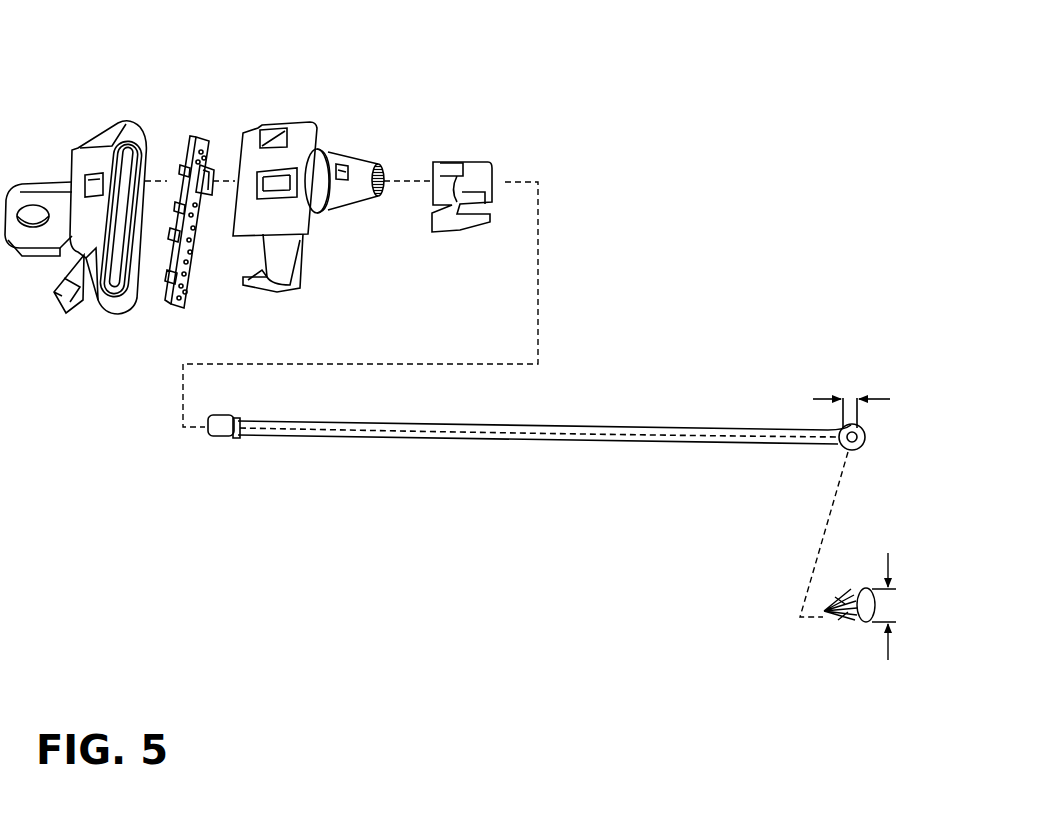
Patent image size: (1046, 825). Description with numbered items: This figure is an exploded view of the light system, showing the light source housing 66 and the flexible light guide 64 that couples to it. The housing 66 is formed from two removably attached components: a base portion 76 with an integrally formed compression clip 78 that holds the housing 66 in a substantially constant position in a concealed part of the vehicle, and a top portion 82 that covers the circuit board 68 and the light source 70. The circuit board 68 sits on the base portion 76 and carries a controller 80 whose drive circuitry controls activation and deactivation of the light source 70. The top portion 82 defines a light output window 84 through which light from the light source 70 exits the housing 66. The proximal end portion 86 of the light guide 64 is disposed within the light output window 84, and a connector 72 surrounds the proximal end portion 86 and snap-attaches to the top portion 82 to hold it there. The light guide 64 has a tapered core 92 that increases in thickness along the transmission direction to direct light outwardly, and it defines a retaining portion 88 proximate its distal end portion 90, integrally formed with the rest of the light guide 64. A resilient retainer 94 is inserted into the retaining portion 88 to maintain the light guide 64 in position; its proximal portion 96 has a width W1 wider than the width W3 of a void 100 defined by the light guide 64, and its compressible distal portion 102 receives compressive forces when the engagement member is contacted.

The light guide 64 is at (612, 428).
The light source housing 66 is at (133, 118).
The circuit board 68 is at (192, 140).
The light source 70 is at (213, 182).
The connector 72 is at (440, 168).
The base portion 76 is at (108, 146).
The compression clip 78 is at (77, 307).
The controller 80 is at (163, 259).
The top portion 82 is at (300, 147).
The light output window 84 is at (382, 178).
The proximal end portion 86 is at (226, 442).
The retaining portion 88 is at (843, 439).
The distal end portion 90 is at (870, 430).
The tapered core 92 is at (333, 430).
The retainer 94 is at (860, 586).
The proximal portion 96 is at (866, 625).
The void 100 is at (862, 448).
The distal portion 102 is at (821, 615).
The width of proximal portion W1 is at (889, 656).
The width of void W3 is at (832, 397).